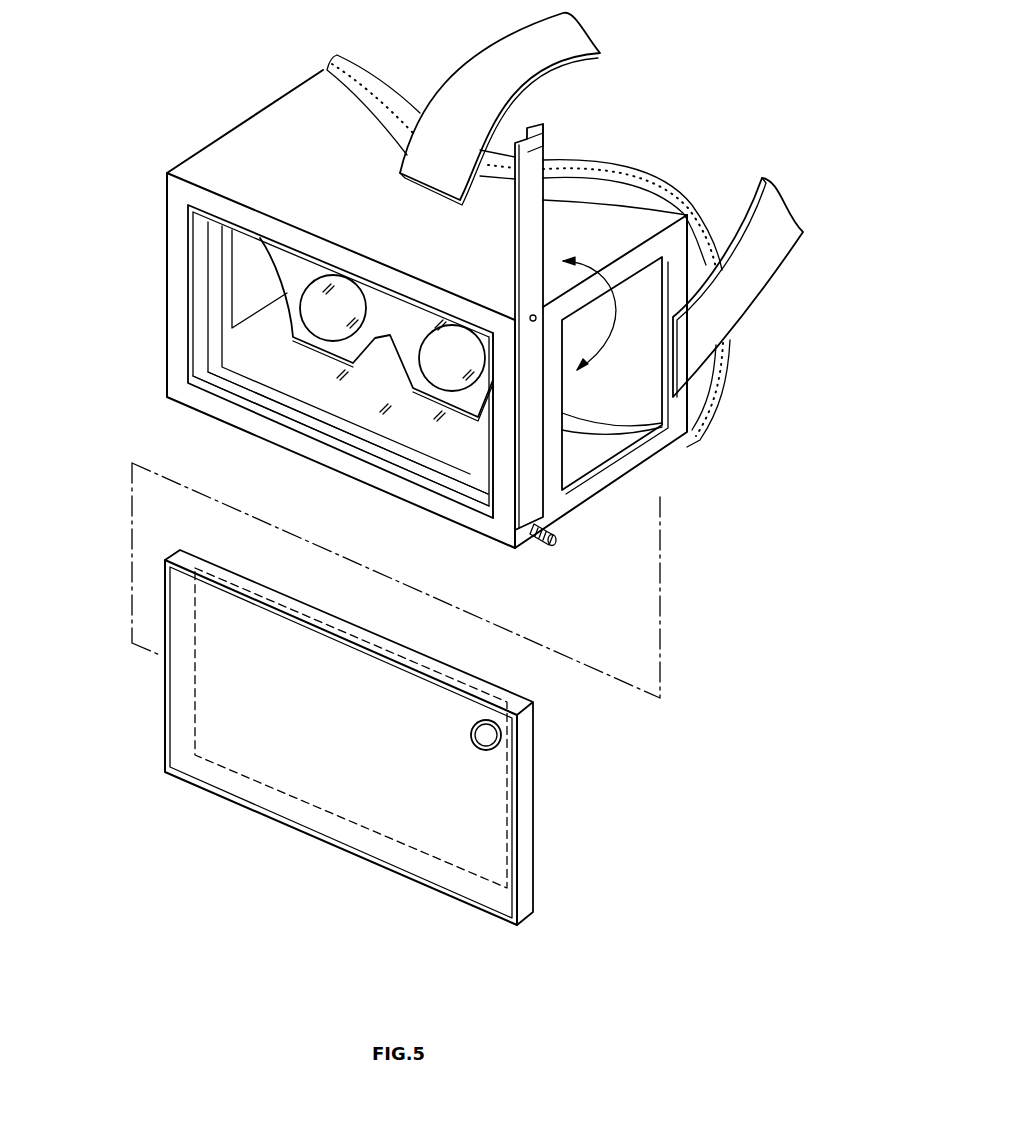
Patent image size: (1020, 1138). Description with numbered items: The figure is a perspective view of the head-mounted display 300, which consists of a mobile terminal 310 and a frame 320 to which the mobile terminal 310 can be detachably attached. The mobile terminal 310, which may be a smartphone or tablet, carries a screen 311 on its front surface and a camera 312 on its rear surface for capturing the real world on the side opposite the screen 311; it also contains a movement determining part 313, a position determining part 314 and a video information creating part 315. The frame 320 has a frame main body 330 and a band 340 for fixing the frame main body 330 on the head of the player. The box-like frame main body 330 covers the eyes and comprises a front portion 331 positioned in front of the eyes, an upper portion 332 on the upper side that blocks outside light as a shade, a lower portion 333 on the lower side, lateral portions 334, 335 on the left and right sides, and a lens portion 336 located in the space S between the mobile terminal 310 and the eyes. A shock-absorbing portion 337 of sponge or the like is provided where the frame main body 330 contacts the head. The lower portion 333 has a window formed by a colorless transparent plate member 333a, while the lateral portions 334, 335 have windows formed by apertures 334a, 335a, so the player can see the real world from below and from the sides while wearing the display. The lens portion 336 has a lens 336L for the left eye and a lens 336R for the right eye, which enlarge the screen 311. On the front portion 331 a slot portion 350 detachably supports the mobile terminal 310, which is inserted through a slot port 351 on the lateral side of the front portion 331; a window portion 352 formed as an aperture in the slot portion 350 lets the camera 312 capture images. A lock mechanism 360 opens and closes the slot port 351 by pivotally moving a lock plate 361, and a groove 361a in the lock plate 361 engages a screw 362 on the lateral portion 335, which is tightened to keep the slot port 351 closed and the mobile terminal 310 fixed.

The head-mounted display 300 is at (682, 563).
The mobile terminal 310 is at (540, 810).
The screen 311 is at (360, 770).
The camera 312 is at (486, 740).
The movement determining part 313 is at (337, 728).
The position determining part 314 is at (337, 728).
The video information creating part 315 is at (215, 775).
The frame 320 is at (233, 125).
The frame main body 330 is at (198, 153).
The front portion 331 is at (178, 288).
The upper portion 332 is at (290, 117).
The lower portion 333 is at (337, 398).
The plate member 333a is at (400, 425).
The lateral portion 334 is at (253, 330).
The aperture 334a is at (232, 290).
The lateral portion 335 is at (528, 443).
The aperture 335a is at (637, 265).
The lens portion 336 is at (390, 313).
The lens for a right eye 336R is at (317, 318).
The lens for a left eye 336L is at (448, 382).
The shock-absorbing portion 337 is at (622, 190).
The band 340 is at (465, 70).
The slot portion 350 is at (222, 385).
The slot port 351 is at (528, 463).
The window portion 352 is at (185, 250).
The lock mechanism 360 is at (515, 262).
The lock plate 361 is at (515, 228).
The groove 361a is at (532, 130).
The screw 362 is at (548, 540).
The space S is at (385, 350).